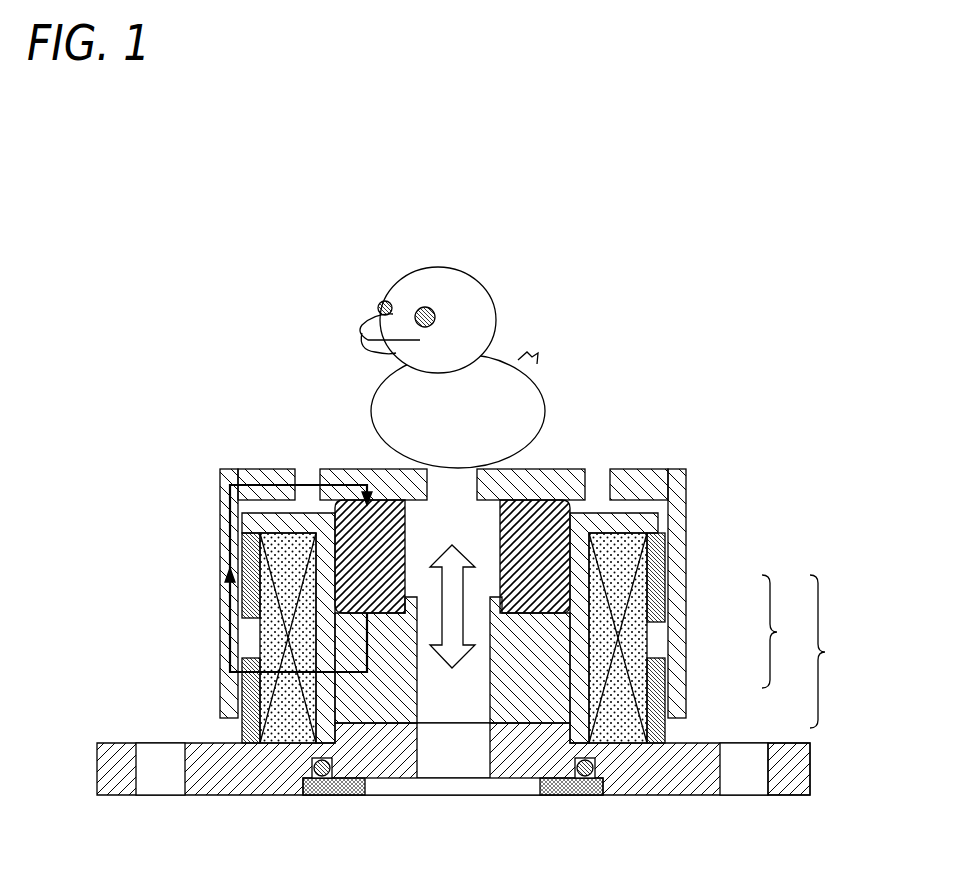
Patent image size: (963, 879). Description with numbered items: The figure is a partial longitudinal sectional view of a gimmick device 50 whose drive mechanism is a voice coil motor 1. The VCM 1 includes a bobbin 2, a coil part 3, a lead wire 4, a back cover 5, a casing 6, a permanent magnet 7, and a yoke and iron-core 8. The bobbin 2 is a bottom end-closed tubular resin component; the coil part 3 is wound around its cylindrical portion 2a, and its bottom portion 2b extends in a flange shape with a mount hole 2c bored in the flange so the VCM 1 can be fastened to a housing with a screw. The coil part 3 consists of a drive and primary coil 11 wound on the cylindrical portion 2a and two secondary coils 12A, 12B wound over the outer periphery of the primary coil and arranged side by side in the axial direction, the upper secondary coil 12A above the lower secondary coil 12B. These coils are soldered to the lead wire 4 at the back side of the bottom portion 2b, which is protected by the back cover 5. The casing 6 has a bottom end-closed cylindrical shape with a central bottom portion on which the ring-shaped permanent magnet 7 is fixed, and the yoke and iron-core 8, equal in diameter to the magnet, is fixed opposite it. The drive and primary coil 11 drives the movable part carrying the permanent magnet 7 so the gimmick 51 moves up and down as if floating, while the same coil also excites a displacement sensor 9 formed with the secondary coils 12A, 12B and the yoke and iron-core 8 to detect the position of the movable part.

The voice coil motor 1 is at (706, 448).
The bobbin 2 is at (127, 743).
The cylindrical portion 2a is at (323, 633).
The bottom portion 2b is at (800, 766).
The mount hole 2c is at (137, 772).
The coil part 3 is at (778, 631).
The lead wire 4 is at (325, 796).
The back cover 5 is at (572, 796).
The casing 6 is at (358, 484).
The permanent magnet 7 is at (540, 513).
The yoke and iron-core 8 is at (550, 668).
The displacement sensor 9 is at (826, 651).
The drive and primary coil 11 is at (622, 636).
The upper secondary coil 12A is at (655, 592).
The lower secondary coil 12B is at (655, 677).
The gimmick device 50 is at (476, 367).
The gimmick 51 is at (525, 388).